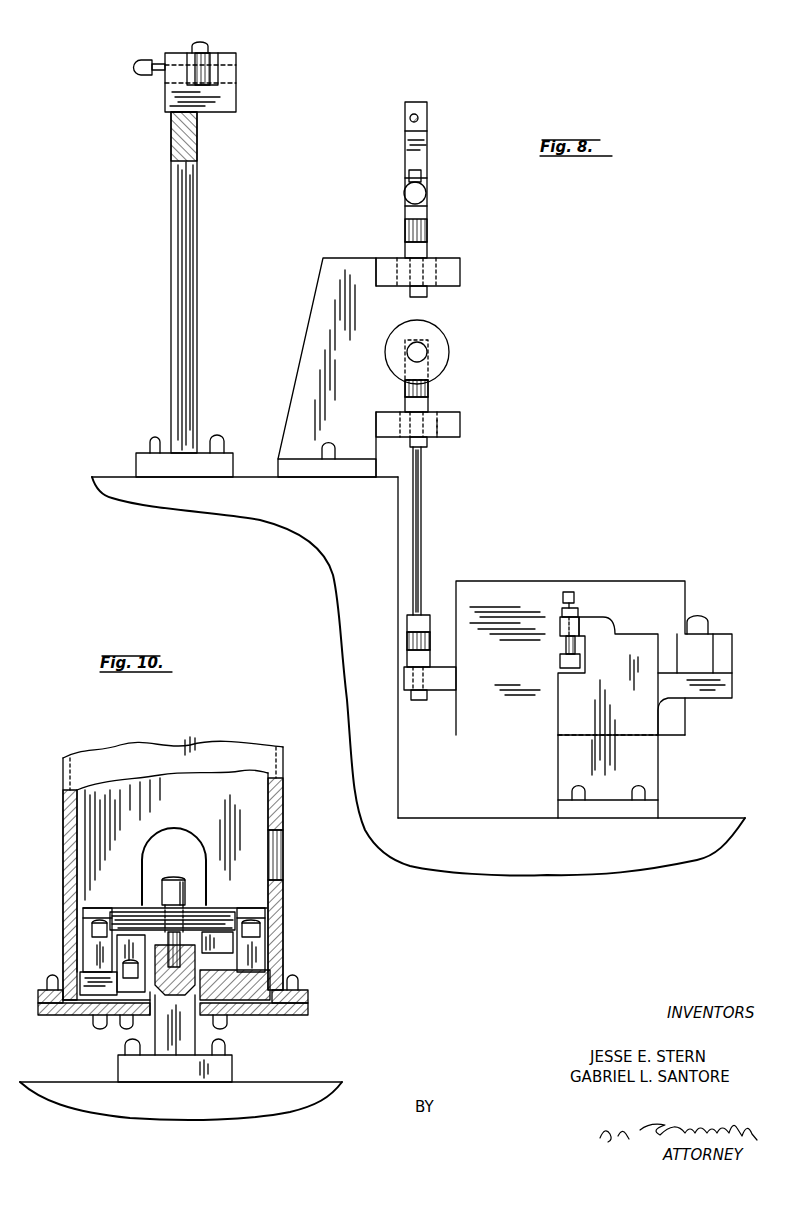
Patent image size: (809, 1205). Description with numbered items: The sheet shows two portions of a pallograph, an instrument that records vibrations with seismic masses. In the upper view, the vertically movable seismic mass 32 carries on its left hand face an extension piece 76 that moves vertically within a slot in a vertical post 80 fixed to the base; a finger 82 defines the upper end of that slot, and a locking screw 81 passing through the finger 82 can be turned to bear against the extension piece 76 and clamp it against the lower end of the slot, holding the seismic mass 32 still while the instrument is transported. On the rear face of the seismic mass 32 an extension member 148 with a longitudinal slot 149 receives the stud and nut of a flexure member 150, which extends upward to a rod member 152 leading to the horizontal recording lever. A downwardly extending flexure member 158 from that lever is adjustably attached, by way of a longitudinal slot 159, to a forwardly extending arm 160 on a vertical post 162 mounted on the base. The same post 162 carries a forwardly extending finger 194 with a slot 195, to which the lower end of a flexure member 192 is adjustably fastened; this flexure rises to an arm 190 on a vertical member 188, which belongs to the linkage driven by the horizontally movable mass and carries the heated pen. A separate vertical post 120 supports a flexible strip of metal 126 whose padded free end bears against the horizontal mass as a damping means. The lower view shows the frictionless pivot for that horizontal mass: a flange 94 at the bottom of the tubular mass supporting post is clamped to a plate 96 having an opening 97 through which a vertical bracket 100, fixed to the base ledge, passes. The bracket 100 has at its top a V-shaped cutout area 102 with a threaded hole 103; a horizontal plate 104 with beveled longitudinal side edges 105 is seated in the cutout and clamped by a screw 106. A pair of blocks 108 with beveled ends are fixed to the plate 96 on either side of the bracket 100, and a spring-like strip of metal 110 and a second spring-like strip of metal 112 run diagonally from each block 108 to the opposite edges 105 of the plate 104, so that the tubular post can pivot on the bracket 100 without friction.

In FIG. 8, the seismic mass 32 is at (663, 600).
In FIG. 8, the extension piece 76 is at (562, 660).
In FIG. 8, the vertical post 80 is at (637, 760).
In FIG. 8, the locking screw 81 is at (572, 596).
In FIG. 8, the finger 82 is at (560, 625).
In FIG. 8, the vertical post 120 is at (175, 200).
In FIG. 8, the flexible strip of metal 126 is at (207, 63).
In FIG. 8, the extension member 148 is at (440, 680).
In FIG. 8, the longitudinal slot 149 is at (456, 650).
In FIG. 8, the flexure member 150 is at (430, 642).
In FIG. 8, the rod member 152 is at (421, 535).
In FIG. 8, the flexure member 158 is at (425, 388).
In FIG. 8, the longitudinal slot 159 is at (433, 438).
In FIG. 8, the forwardly extending arm 160 is at (455, 427).
In FIG. 8, the vertical post 162 is at (320, 310).
In FIG. 8, the vertical member 188 is at (417, 152).
In FIG. 8, the arm 190 is at (425, 188).
In FIG. 8, the flexure member 192 is at (422, 233).
In FIG. 8, the forwardly extending finger 194 is at (450, 268).
In FIG. 8, the slot 195 is at (430, 265).
In FIG. 10, the outwardly extending flange 94 is at (305, 993).
In FIG. 10, the plate 96 is at (297, 1015).
In FIG. 10, the opening 97 is at (155, 1015).
In FIG. 10, the vertical bracket 100 is at (215, 1063).
In FIG. 10, the V-shaped cutout area 102 is at (180, 987).
In FIG. 10, the threaded hole 103 is at (168, 927).
In FIG. 10, the horizontal plate 104 is at (220, 908).
In FIG. 10, the beveled longitudinal side edges 105 is at (202, 917).
In FIG. 10, the screw 106 is at (172, 880).
In FIG. 10, the blocks 108 is at (268, 992).
In FIG. 10, the spring-like strip of metal 110 is at (92, 948).
In FIG. 10, the spring-like strip of metal 112 is at (132, 953).